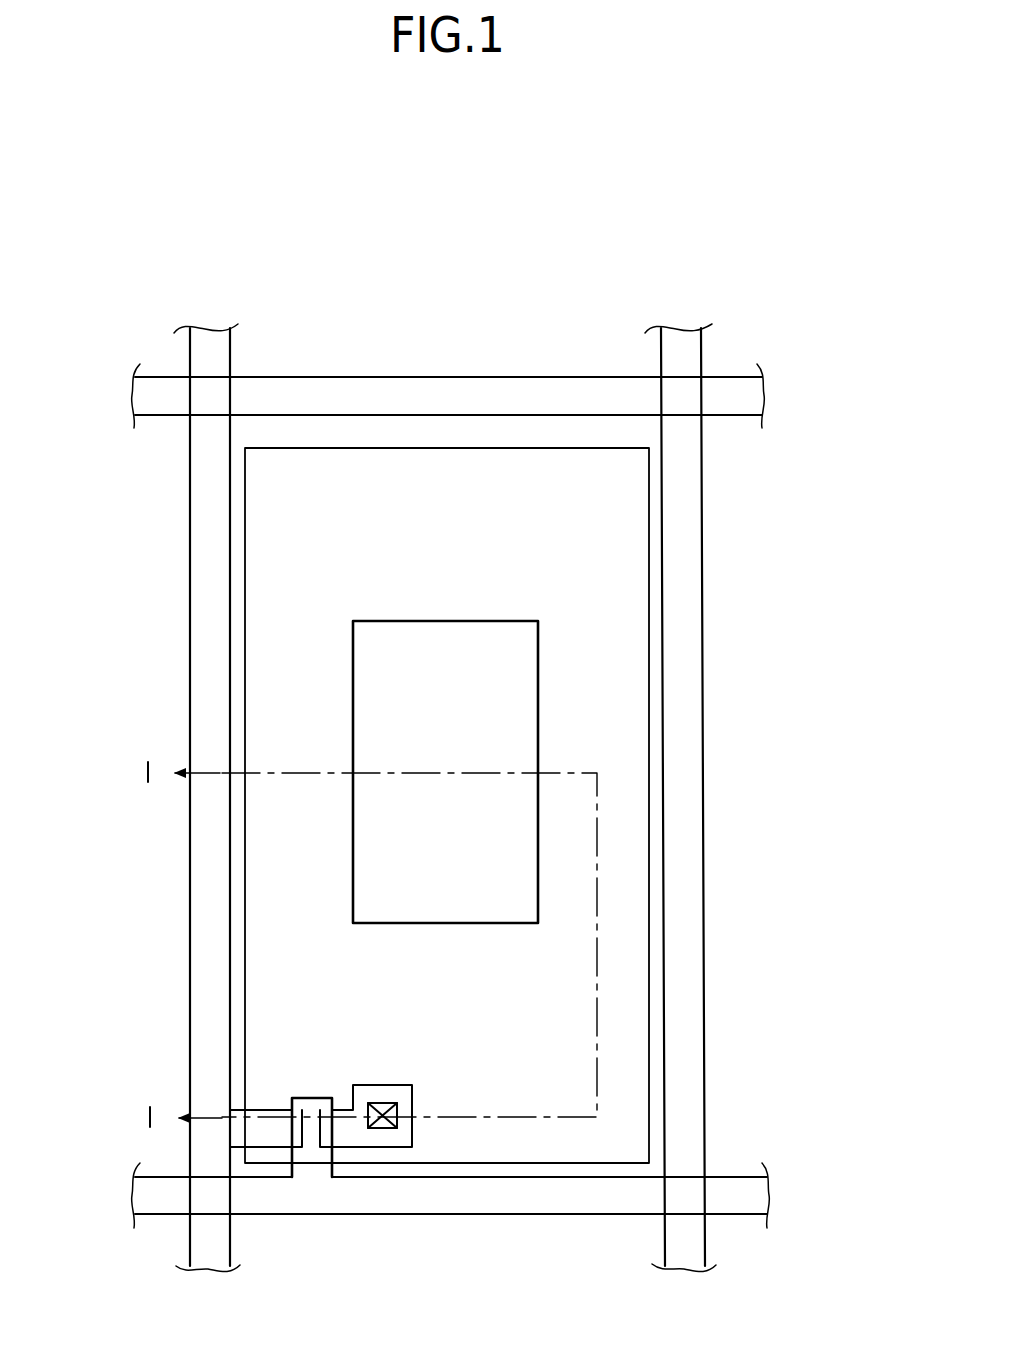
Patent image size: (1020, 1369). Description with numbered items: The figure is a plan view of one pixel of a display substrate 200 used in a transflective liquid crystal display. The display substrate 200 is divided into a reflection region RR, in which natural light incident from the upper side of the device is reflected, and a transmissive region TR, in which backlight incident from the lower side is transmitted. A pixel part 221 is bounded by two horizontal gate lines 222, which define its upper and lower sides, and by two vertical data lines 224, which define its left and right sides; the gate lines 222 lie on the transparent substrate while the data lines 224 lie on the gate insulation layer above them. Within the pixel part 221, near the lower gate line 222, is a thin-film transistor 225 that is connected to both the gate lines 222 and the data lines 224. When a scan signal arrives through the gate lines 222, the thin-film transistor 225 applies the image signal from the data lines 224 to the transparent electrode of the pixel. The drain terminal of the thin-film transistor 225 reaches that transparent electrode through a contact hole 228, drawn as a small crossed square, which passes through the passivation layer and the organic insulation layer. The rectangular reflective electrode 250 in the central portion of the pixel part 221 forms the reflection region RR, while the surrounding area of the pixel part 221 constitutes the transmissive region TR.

The display substrate 200 is at (410, 328).
The pixel part 221 is at (280, 579).
The gate line 222 is at (499, 1206).
The data line 224 is at (208, 971).
The thin-film transistor 225 is at (315, 1183).
The contact hole 228 is at (386, 1134).
The reflective electrode 250 is at (603, 680).
The reflection region RR is at (600, 555).
The transmissive region TR is at (507, 727).